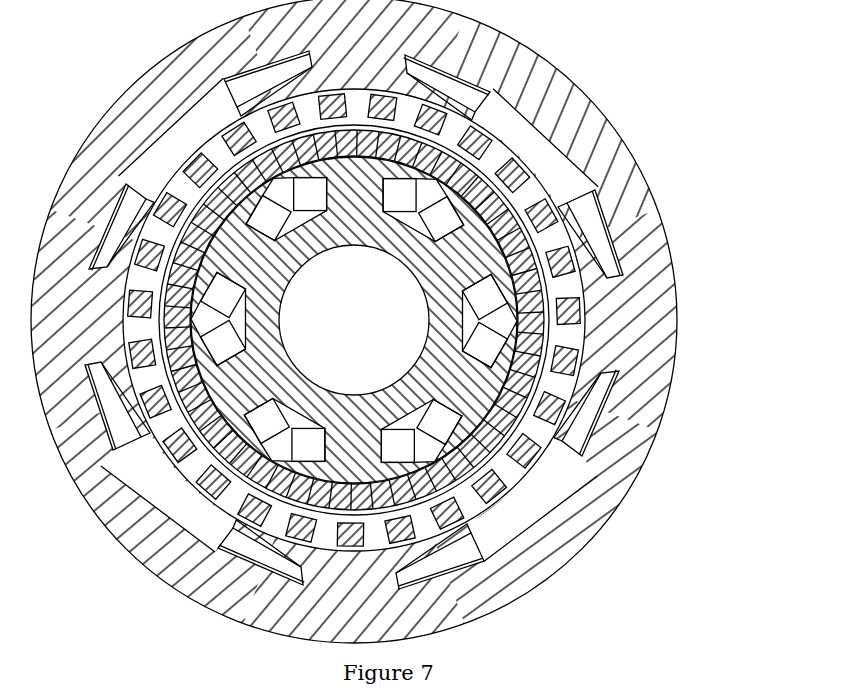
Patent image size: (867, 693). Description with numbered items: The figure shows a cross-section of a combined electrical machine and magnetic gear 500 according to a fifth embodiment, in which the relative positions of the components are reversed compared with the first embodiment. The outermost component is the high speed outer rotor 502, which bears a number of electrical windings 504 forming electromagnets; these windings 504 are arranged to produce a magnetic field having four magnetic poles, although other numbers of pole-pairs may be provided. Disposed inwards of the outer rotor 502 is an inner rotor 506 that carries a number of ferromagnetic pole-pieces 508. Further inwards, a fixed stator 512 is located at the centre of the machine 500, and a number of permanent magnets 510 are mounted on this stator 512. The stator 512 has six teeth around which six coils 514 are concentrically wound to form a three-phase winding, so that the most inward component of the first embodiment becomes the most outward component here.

The electrical machine 500 is at (543, 590).
The outer rotor 502 is at (604, 134).
The electrical windings 504 is at (620, 233).
The inner rotor 506 is at (217, 153).
The ferromagnetic pole-pieces 508 is at (192, 174).
The permanent magnets 510 is at (537, 325).
The fixed stator 512 is at (326, 252).
The coils 514 is at (413, 383).